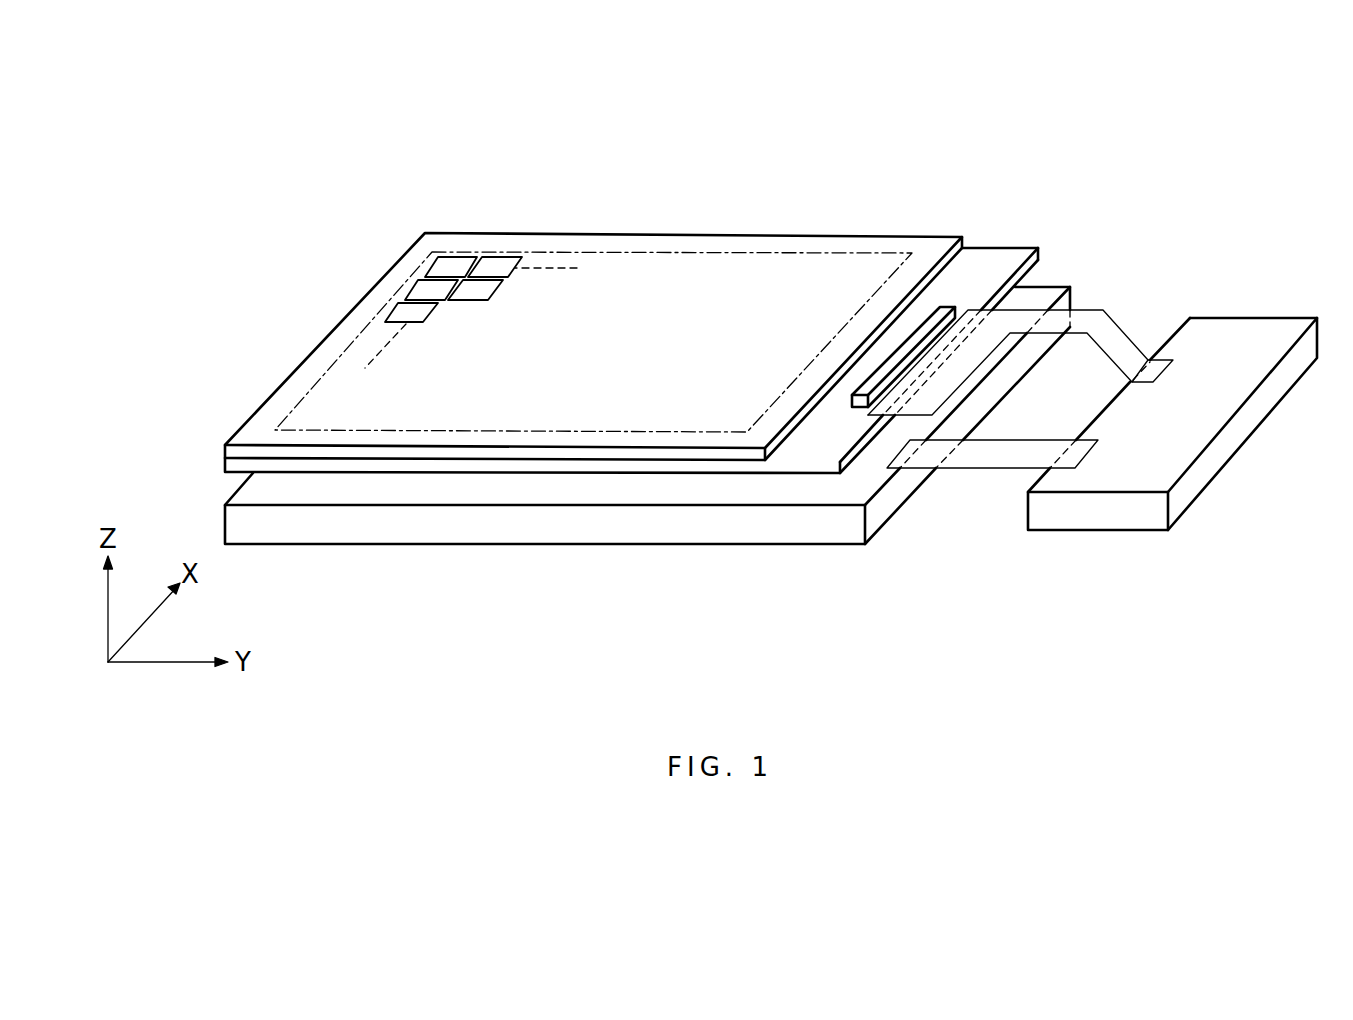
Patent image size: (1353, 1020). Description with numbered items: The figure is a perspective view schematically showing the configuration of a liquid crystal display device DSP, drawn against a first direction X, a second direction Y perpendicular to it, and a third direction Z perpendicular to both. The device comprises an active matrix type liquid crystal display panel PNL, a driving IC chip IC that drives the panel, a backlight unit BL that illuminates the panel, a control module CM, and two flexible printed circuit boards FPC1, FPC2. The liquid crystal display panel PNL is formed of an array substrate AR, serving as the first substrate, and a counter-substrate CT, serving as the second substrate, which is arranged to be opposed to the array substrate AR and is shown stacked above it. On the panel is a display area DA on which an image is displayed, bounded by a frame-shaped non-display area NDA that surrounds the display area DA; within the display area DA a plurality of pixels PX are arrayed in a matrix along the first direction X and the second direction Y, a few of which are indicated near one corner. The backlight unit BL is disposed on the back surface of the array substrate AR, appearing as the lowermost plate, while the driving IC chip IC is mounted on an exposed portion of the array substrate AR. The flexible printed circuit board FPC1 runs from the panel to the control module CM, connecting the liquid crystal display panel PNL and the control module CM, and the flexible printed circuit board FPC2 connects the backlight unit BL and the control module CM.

The liquid crystal display device DSP is at (1143, 157).
The liquid crystal display panel PNL is at (222, 458).
The counter-substrate CT is at (921, 237).
The array substrate AR is at (1036, 250).
The display area DA is at (557, 262).
The non-display area NDA is at (690, 243).
The pixel PX is at (453, 265).
The driving IC chip IC is at (942, 305).
The flexible printed circuit board FPC1 is at (1117, 340).
The flexible printed circuit board FPC2 is at (983, 458).
The backlight unit BL is at (763, 527).
The control module CM is at (1100, 518).